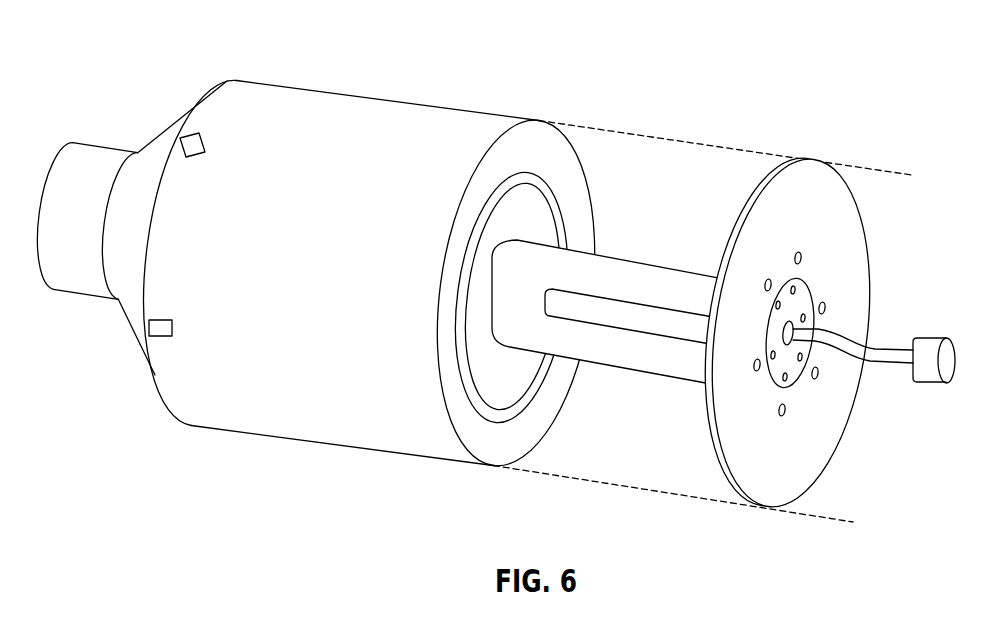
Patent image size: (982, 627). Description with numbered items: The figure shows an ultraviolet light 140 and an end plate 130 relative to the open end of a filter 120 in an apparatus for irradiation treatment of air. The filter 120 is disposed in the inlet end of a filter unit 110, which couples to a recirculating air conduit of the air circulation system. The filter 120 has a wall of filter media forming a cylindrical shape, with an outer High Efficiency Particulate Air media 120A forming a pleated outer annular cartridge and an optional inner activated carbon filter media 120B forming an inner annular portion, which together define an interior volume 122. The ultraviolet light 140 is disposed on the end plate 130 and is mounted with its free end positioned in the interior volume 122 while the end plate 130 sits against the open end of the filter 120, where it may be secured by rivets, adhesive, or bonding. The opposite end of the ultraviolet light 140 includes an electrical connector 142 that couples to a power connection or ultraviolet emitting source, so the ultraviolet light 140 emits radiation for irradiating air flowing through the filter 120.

The filter unit 110 is at (140, 350).
The filter 120 is at (392, 112).
The outer High Efficiency Particulate Air (HEPA) media 120A is at (520, 137).
The inner activated carbon filter media 120B is at (530, 178).
The interior volume 122 is at (545, 230).
The end plate 130 is at (760, 490).
The ultraviolet light 140 is at (643, 317).
The electrical connector 142 is at (926, 337).